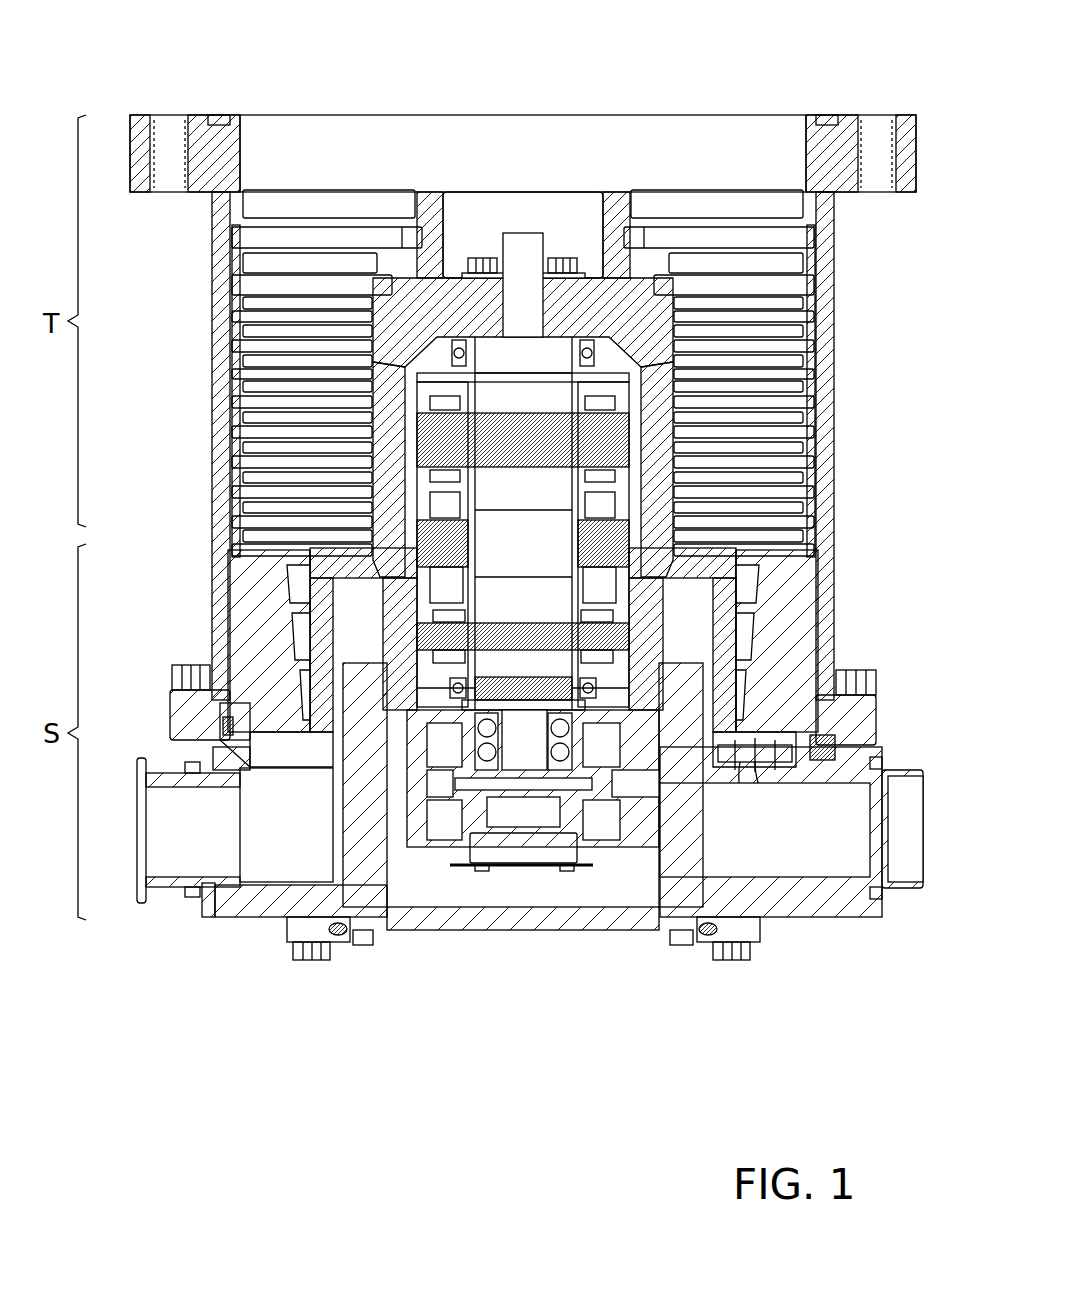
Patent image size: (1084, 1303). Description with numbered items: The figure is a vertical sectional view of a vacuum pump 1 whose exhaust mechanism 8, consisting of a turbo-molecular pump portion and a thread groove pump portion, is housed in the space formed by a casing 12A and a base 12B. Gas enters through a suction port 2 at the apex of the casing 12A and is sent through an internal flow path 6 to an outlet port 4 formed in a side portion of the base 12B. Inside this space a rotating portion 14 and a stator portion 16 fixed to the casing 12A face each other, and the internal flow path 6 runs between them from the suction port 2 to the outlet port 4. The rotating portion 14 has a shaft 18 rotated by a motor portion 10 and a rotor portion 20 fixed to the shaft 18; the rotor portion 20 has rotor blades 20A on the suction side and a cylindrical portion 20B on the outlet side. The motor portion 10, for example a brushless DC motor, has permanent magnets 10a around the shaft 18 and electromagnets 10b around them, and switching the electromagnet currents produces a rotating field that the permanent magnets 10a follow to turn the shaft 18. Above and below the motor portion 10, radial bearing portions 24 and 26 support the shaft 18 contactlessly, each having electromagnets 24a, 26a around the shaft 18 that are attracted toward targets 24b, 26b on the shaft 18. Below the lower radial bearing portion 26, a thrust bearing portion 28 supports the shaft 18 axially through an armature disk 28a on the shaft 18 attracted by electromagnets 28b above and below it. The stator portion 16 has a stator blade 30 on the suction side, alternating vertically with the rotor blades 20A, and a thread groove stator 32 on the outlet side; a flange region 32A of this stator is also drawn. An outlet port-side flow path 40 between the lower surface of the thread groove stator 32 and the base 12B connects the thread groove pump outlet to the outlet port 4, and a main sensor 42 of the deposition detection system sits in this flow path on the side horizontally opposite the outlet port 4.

The vacuum pump 1 is at (918, 76).
The suction port 2 is at (549, 82).
The outlet port 4 is at (122, 848).
The internal flow path 6 is at (610, 537).
The exhaust mechanism 8 is at (198, 518).
The motor portion 10 is at (686, 523).
The permanent magnets 10a is at (682, 523).
The electromagnets 10b is at (553, 543).
The casing 12A is at (830, 390).
The base 12B is at (822, 850).
The rotating portion 14 is at (613, 188).
The stator portion 16 is at (868, 420).
The shaft 18 is at (518, 230).
The rotor portion 20 is at (725, 635).
The rotor blades 20A is at (343, 200).
The cylindrical portion 20B is at (740, 700).
The radial bearing portion 24 is at (319, 373).
The electromagnets 24a is at (400, 445).
The targets 24b is at (510, 410).
The radial bearing portion 26 is at (284, 638).
The electromagnets 26a is at (480, 623).
The targets 26b is at (480, 608).
The thrust bearing portion 28 is at (481, 838).
The armature disk 28a is at (480, 842).
The electromagnets 28b is at (405, 790).
The stator blade 30 is at (790, 243).
The thread groove stator 32 is at (780, 576).
The stator cylinder flange 32A is at (300, 625).
The outlet port-side flow path 40 is at (790, 750).
The main sensor 42 is at (732, 830).